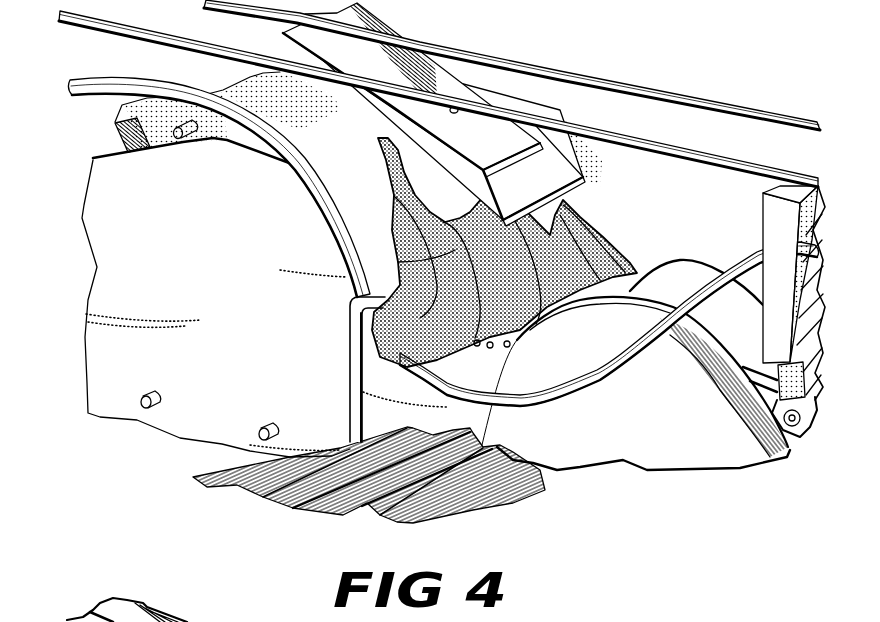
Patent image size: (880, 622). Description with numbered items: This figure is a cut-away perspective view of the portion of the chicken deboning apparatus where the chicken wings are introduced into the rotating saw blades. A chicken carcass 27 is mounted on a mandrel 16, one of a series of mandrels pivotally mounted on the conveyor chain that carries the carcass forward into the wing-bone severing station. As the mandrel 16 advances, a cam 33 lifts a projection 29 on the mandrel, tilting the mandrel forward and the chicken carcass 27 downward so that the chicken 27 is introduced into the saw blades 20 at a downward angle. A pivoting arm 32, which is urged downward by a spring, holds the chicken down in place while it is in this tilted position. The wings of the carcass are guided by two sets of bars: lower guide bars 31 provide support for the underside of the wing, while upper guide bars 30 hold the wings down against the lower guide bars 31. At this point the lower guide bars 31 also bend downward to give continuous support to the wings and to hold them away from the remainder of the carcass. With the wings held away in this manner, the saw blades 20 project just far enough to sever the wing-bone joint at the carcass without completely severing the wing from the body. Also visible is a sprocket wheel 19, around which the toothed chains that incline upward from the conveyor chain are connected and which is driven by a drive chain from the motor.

The mandrel 16 is at (763, 207).
The sprocket wheel 19 is at (317, 510).
The saw blade 20 is at (670, 267).
The chicken carcass 27 is at (583, 223).
The projection 29 is at (179, 139).
The upper guide bar 30 is at (117, 30).
The lower guide bar 31 is at (317, 190).
The pivoting arm 32 is at (437, 80).
The cam 33 is at (228, 288).